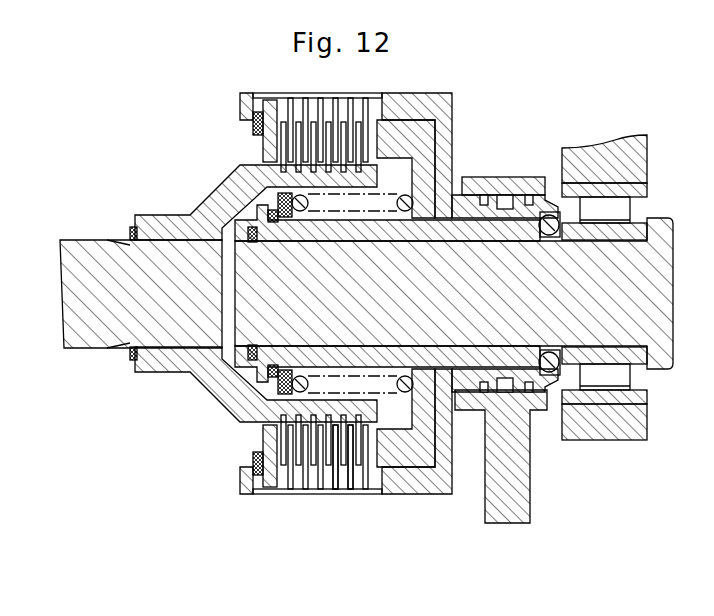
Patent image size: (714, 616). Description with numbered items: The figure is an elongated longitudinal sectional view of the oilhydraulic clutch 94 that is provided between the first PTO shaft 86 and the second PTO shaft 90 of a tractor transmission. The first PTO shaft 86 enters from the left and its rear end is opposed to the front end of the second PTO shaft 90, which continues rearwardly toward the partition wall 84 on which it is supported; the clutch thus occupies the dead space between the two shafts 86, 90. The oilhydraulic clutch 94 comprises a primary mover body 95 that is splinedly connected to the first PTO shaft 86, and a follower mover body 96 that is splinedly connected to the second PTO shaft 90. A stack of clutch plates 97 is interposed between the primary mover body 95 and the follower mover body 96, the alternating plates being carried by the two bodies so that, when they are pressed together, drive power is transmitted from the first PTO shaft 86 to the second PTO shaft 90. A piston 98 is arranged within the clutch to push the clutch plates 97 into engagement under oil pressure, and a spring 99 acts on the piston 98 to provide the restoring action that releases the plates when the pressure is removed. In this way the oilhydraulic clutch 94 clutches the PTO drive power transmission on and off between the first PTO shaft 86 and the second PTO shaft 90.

The partition wall 84 is at (606, 420).
The first PTO shaft 86 is at (121, 299).
The second PTO shaft 90 is at (491, 310).
The oilhydraulic clutch 94 is at (280, 510).
The primary mover body 95 is at (170, 365).
The follower mover body 96 is at (413, 483).
The clutch plates 97 is at (353, 490).
The piston 98 is at (423, 455).
The spring 99 is at (300, 212).